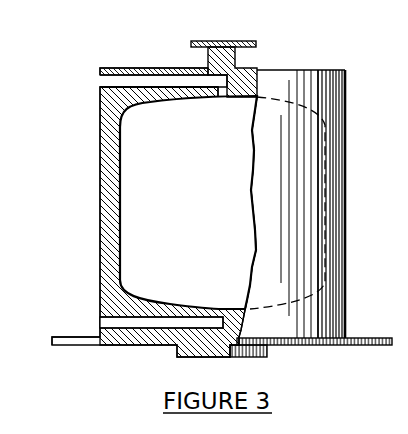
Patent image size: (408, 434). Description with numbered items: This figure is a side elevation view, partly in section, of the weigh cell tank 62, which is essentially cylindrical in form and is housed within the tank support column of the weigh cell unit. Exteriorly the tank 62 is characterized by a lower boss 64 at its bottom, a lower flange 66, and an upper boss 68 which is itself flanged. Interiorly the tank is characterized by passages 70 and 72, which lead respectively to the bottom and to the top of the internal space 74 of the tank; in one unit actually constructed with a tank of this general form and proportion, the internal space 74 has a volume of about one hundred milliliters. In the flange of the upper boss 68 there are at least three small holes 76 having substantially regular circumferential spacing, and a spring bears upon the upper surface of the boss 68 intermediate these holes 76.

The weigh cell tank 62 is at (139, 212).
The lower boss 64 is at (256, 358).
The lower flange 66 is at (365, 338).
The upper boss 68 is at (241, 52).
The passage 70 is at (100, 322).
The passage 72 is at (100, 80).
The internal space 74 is at (206, 207).
The small holes 76 is at (249, 42).